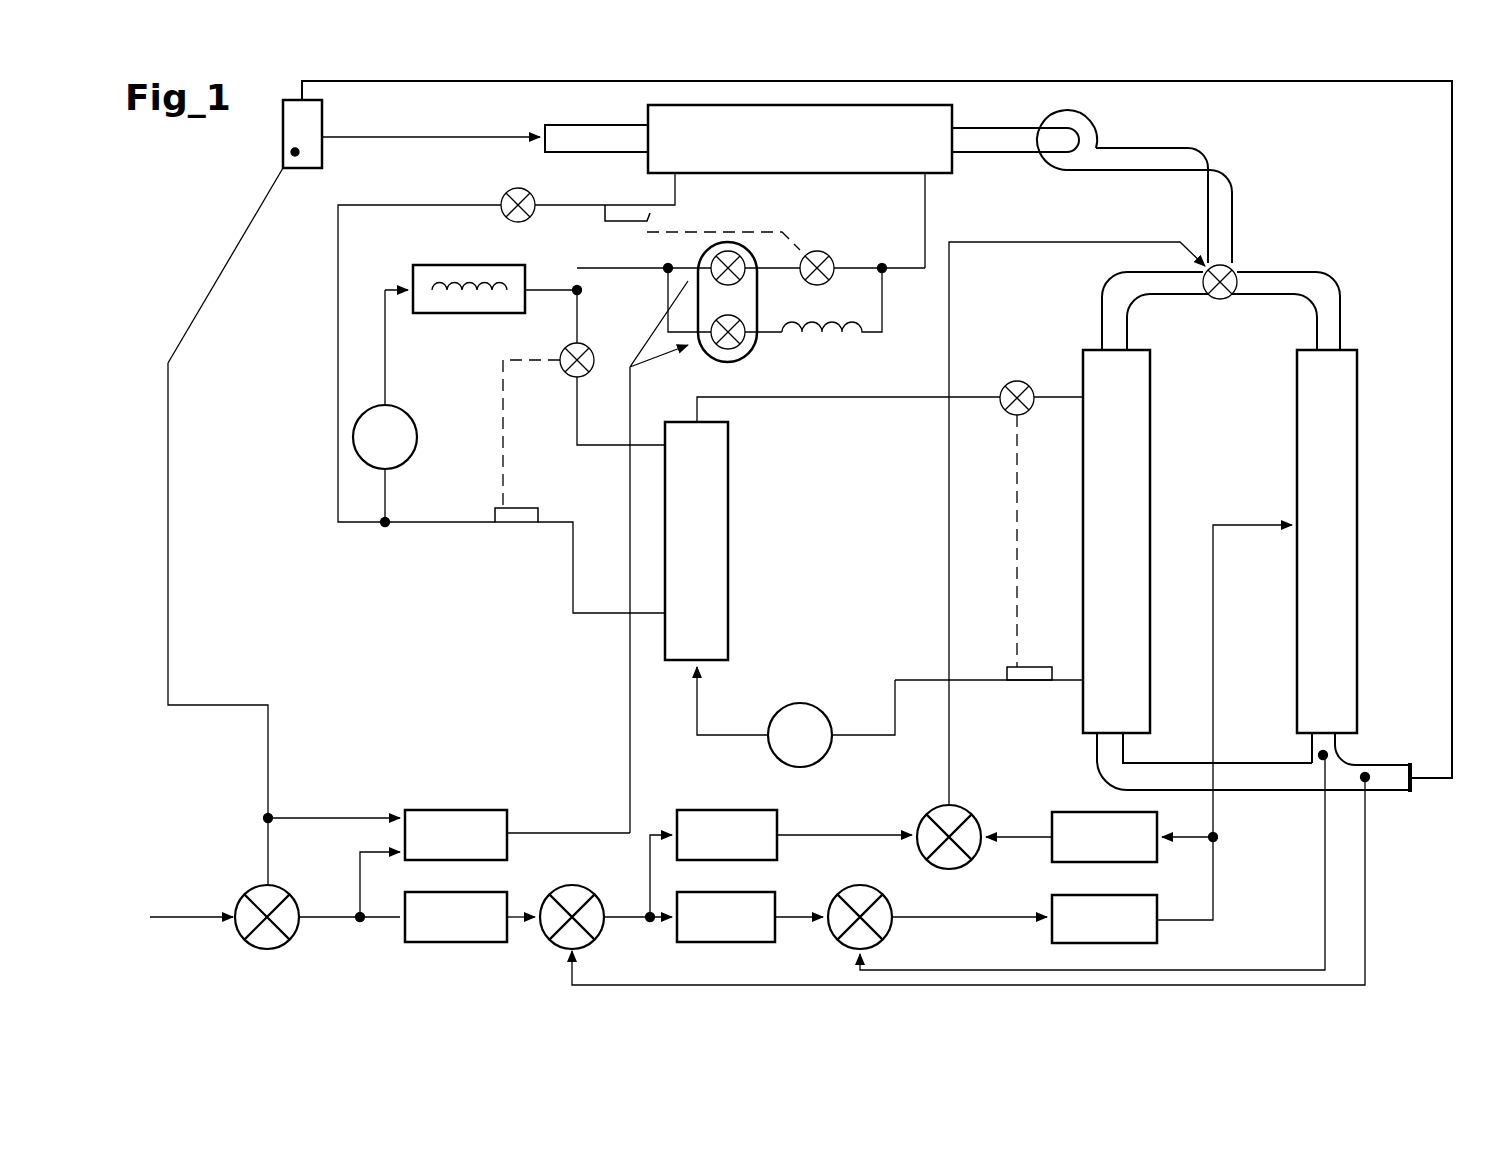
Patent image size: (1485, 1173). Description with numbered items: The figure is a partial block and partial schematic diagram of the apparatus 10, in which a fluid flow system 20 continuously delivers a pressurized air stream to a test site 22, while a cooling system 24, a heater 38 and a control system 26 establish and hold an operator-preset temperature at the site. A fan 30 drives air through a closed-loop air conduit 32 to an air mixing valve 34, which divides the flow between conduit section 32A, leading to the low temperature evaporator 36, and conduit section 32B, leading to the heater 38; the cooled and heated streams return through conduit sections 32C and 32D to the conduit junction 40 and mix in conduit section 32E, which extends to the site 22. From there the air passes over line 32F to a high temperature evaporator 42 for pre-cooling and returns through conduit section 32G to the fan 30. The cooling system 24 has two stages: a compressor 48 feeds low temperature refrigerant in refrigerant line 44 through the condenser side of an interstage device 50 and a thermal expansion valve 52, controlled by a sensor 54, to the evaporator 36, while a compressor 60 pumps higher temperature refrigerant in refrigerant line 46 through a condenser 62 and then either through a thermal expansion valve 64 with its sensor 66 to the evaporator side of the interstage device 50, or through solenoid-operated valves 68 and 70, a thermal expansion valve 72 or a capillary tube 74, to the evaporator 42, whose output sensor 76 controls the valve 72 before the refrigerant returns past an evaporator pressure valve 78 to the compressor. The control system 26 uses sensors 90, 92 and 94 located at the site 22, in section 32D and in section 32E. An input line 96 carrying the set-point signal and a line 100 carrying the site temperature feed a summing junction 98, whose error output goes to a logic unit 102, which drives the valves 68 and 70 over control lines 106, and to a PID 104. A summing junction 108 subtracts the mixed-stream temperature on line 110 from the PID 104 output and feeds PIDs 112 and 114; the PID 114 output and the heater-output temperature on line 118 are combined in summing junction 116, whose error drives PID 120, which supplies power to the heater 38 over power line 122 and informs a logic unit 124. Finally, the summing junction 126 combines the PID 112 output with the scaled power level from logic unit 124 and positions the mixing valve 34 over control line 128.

The apparatus 10 is at (260, 203).
The fluid flow system 20 is at (1341, 283).
The test site 22 is at (322, 140).
The cooling system 24 is at (333, 408).
The control system 26 is at (565, 968).
The fan 30 is at (1092, 125).
The air conduit 32 is at (1238, 178).
The conduit section 32A is at (1107, 316).
The conduit section 32B is at (1343, 311).
The conduit section 32C is at (1130, 768).
The conduit section 32D is at (1340, 745).
The conduit section 32E is at (468, 86).
The line 32F is at (490, 140).
The conduit section 32G is at (1015, 130).
The air mixing valve 34 is at (1283, 243).
The low temperature evaporator 36 is at (1155, 471).
The heater 38 is at (1360, 471).
The conduit junction 40 is at (1347, 790).
The high temperature evaporator 42 is at (665, 110).
The refrigerant line 44 is at (915, 400).
The refrigerant line 46 is at (500, 207).
The compressor 48 is at (858, 688).
The interstage device 50 is at (730, 497).
The thermal expansion valve 52 is at (1023, 381).
The sensor 54 is at (1040, 665).
The compressor 60 is at (418, 447).
The condenser 62 is at (432, 265).
The thermal expansion valve 64 is at (566, 345).
The sensor 66 is at (540, 510).
The solenoid-operated valve 68 is at (705, 263).
The solenoid-operated valve 70 is at (742, 355).
The thermal expansion valve 72 is at (824, 250).
The capillary tube 74 is at (848, 342).
The sensor 76 is at (608, 211).
The valve 78 is at (531, 193).
The sensor 90 is at (298, 156).
The sensor 92 is at (1319, 755).
The sensor 94 is at (1368, 781).
The electrical input line 96 is at (215, 910).
The summing junction 98 is at (322, 868).
The line 100 is at (225, 707).
The logic unit 102 is at (505, 810).
The proportional integrator differentiator (PID) 104 is at (442, 940).
The electrical control lines 106 is at (657, 328).
The summing junction 108 is at (602, 900).
The line 110 is at (750, 983).
The PID 112 is at (760, 810).
The PID 114 is at (755, 943).
The summing junction 116 is at (882, 858).
The line 118 is at (940, 969).
The PID 120 is at (1150, 940).
The power line 122 is at (1211, 628).
The logic unit 124 is at (1088, 811).
The summing junction 126 is at (975, 816).
The control line 128 is at (948, 563).